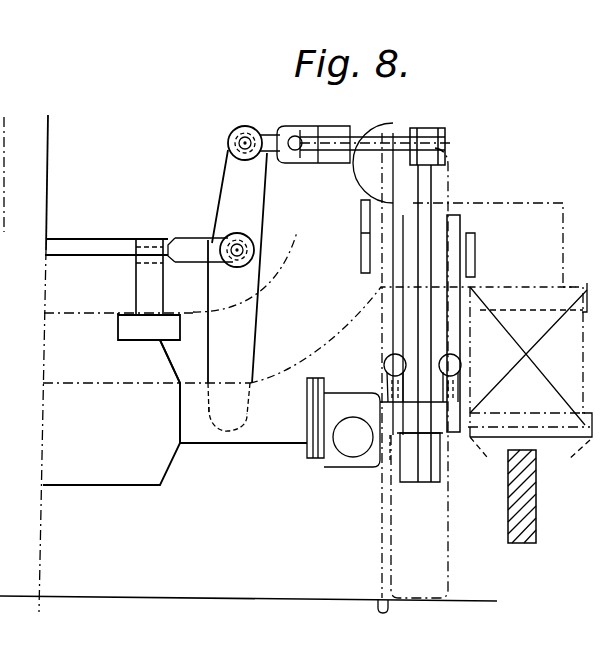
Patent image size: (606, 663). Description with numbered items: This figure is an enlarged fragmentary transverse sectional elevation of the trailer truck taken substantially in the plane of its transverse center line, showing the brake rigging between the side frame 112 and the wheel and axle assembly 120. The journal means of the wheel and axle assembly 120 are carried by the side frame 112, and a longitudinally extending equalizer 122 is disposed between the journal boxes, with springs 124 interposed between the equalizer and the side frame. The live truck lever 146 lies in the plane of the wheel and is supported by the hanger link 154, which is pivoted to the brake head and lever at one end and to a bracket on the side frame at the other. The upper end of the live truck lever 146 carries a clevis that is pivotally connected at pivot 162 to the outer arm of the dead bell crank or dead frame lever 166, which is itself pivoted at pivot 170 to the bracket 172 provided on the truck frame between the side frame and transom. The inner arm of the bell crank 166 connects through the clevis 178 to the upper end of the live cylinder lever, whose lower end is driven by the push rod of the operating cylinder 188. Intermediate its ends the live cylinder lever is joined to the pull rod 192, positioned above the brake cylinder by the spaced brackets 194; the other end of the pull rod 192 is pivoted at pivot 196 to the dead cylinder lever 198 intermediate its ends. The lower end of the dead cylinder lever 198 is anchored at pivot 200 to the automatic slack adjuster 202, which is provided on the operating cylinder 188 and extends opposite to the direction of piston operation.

The side frame 112 is at (498, 257).
The wheel and axle assembly 120 is at (395, 567).
The equalizer 122 is at (528, 515).
The springs 124 is at (530, 371).
The live truck lever 146 is at (428, 182).
The hanger link 154 is at (452, 230).
The pivot 162 is at (432, 138).
The dead bell crank or dead frame lever 166 is at (375, 143).
The pivot 170 is at (365, 221).
The bracket 172 is at (336, 183).
The clevis 178 is at (270, 138).
The operating cylinder 188 is at (83, 466).
The pull rod 192 is at (82, 248).
The brackets 194 is at (147, 284).
The pivot 196 is at (232, 240).
The dead cylinder lever 198 is at (235, 332).
The pivot 200 is at (235, 414).
The automatic slack adjuster 202 is at (196, 435).